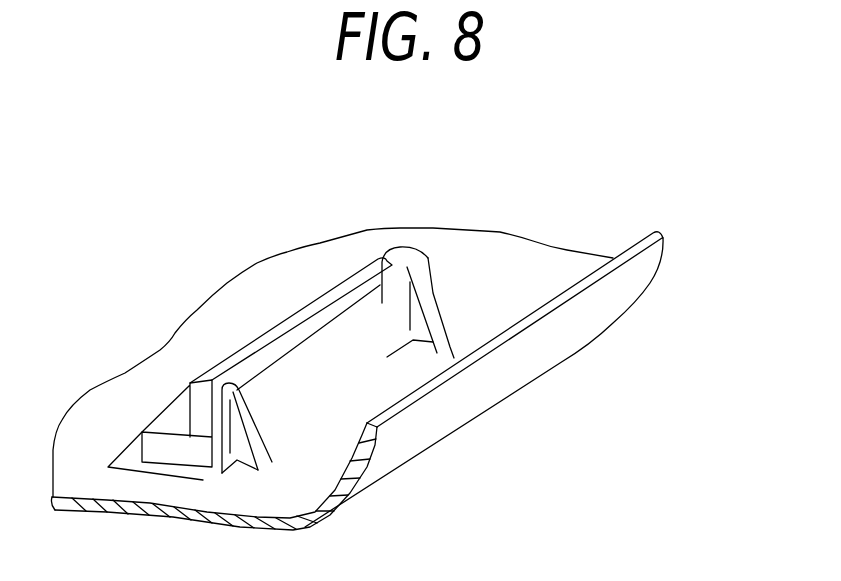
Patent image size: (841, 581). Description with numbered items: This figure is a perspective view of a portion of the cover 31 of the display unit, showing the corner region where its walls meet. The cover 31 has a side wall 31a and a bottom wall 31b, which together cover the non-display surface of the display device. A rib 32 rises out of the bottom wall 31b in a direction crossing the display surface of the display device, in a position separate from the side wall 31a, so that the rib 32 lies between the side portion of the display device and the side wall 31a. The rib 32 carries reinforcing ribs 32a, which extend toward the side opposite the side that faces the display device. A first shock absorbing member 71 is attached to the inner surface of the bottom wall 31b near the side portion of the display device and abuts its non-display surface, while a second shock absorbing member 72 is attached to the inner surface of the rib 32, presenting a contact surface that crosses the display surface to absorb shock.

The cover 31 is at (446, 435).
The side wall 31a is at (633, 285).
The bottom wall 31b is at (543, 273).
The rib 32 is at (382, 303).
The reinforcing rib 32a is at (432, 295).
The first shock absorbing member 71 is at (170, 422).
The second shock absorbing member 72 is at (318, 302).